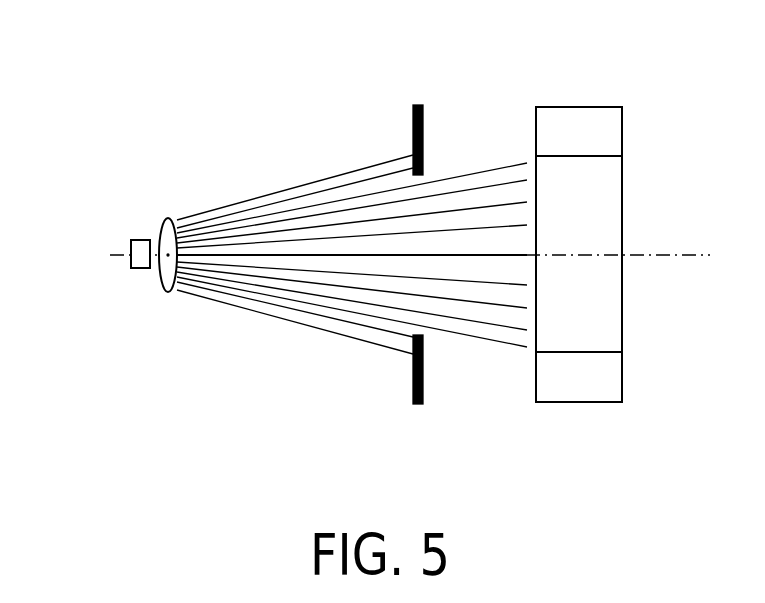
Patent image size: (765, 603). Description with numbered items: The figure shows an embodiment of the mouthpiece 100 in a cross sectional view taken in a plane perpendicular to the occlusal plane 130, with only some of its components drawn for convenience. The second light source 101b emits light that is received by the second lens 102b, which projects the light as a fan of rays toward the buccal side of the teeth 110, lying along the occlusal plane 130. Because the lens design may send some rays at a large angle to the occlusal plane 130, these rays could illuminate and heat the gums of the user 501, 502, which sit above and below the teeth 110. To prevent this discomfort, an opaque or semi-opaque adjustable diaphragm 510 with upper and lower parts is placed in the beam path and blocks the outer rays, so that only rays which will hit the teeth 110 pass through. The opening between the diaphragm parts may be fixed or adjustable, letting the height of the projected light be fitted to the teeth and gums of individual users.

The mouthpiece 100 is at (116, 107).
The second light source 101b is at (142, 240).
The second lens 102b is at (160, 276).
The adjustable diaphragm 510 is at (413, 114).
The teeth 110 is at (617, 203).
The gums of the user 501 is at (617, 132).
The gums of the user 502 is at (617, 376).
The occlusal plane 130 is at (680, 255).